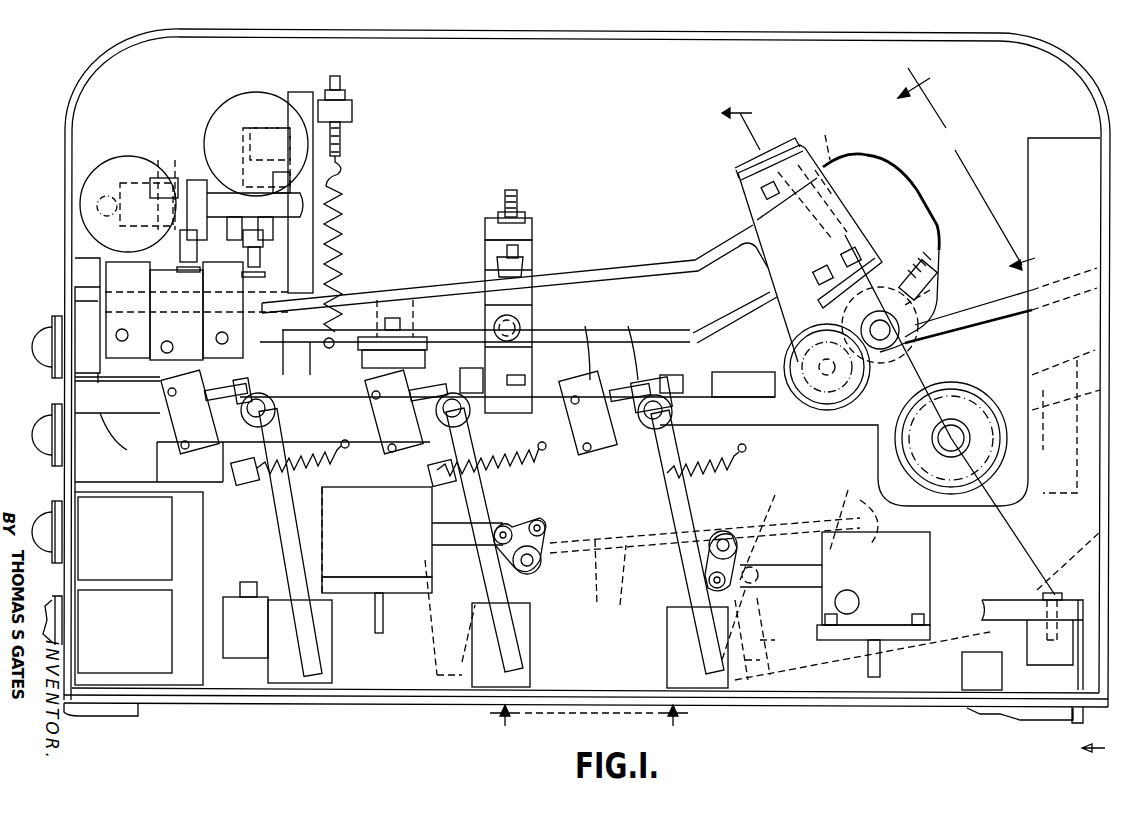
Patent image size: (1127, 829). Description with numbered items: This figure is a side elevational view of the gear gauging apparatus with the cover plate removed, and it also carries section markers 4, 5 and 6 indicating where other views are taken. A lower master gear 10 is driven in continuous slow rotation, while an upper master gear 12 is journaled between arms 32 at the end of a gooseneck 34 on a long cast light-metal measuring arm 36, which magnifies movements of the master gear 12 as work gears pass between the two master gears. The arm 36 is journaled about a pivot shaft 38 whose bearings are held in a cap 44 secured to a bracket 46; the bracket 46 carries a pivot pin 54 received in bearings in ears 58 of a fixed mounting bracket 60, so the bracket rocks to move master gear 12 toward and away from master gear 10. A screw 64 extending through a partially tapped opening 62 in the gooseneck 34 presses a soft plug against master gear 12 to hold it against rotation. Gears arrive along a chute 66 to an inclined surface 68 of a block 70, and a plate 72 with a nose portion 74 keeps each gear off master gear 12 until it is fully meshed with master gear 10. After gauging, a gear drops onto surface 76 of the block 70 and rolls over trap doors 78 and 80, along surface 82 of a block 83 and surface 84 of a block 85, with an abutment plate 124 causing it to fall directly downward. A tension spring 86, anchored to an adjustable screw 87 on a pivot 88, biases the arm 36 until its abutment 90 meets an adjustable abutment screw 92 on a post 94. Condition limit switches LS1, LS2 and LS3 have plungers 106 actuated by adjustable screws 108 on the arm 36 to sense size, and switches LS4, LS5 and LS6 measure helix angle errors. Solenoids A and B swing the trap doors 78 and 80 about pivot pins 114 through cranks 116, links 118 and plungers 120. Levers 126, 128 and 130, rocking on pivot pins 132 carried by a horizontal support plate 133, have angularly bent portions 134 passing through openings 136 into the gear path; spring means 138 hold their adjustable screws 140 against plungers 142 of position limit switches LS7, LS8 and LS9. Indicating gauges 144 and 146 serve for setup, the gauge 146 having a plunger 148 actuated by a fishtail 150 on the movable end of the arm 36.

The master gear 10 is at (975, 380).
The master gear 12 is at (930, 385).
The arms 32 is at (872, 390).
The gooseneck 34 is at (912, 192).
The measuring or gauging arm 36 is at (445, 296).
The pivot shaft 38 is at (833, 153).
The cap 44 is at (795, 150).
The bracket 46 is at (845, 215).
The pivot pin 54 is at (815, 365).
The ears 58 is at (775, 350).
The fixed mounting bracket 60 is at (740, 370).
The partially tapped opening 62 is at (942, 230).
The screw 64 is at (950, 260).
The chute or trackway 66 is at (1060, 345).
The surface 68 is at (1048, 440).
The block 70 is at (940, 656).
The plate 72 is at (1012, 312).
The nose portion 74 is at (935, 342).
The surface 76 is at (852, 500).
The trap door 78 is at (759, 567).
The trap door 80 is at (595, 540).
The surface 82 is at (700, 520).
The block 83 is at (612, 606).
The surface 84 is at (438, 530).
The block 85 is at (420, 628).
The tension spring 86 is at (342, 222).
The adjustable screw 87 is at (340, 139).
The pivot 88 is at (299, 90).
The abutment 90 is at (525, 265).
The adjustable abutment screw 92 is at (520, 245).
The post 94 is at (535, 313).
The plungers 106 is at (272, 236).
The adjustable screws 108 is at (272, 265).
The pivot pins 114 is at (541, 560).
The cranks 116 is at (545, 535).
The links 118 is at (533, 522).
The plungers 120 is at (455, 530).
The abutment plate 124 is at (352, 476).
The lever 126 is at (262, 518).
The lever 128 is at (500, 500).
The lever 130 is at (680, 490).
The pivot pins 132 is at (670, 411).
The horizontal support plate 133 is at (480, 420).
The angularly bent portions 134 is at (765, 630).
The openings 136 is at (695, 647).
The spring means 138 is at (675, 450).
The adjustable screws 140 is at (628, 343).
The plungers 142 is at (478, 340).
The indicating gauge 144 is at (254, 90).
The indicating gauge 146 is at (80, 192).
The plunger 148 is at (105, 208).
The fishtail 150 is at (95, 270).
The solenoid A is at (920, 590).
The solenoid B is at (432, 565).
The condition limit switch LS1 is at (145, 190).
The condition limit switch LS2 is at (190, 178).
The condition limit switch LS3 is at (247, 157).
The condition limit switch LS4 is at (153, 294).
The condition limit switch LS5 is at (197, 315).
The condition limit switch LS6 is at (234, 294).
The position limit switch LS7 is at (614, 400).
The position limit switch LS8 is at (355, 430).
The position limit switch LS9 is at (160, 405).
The section line 4- 4 is at (958, 174).
The section line 5- 5 is at (589, 726).
The section line 6- 6 is at (725, 128).